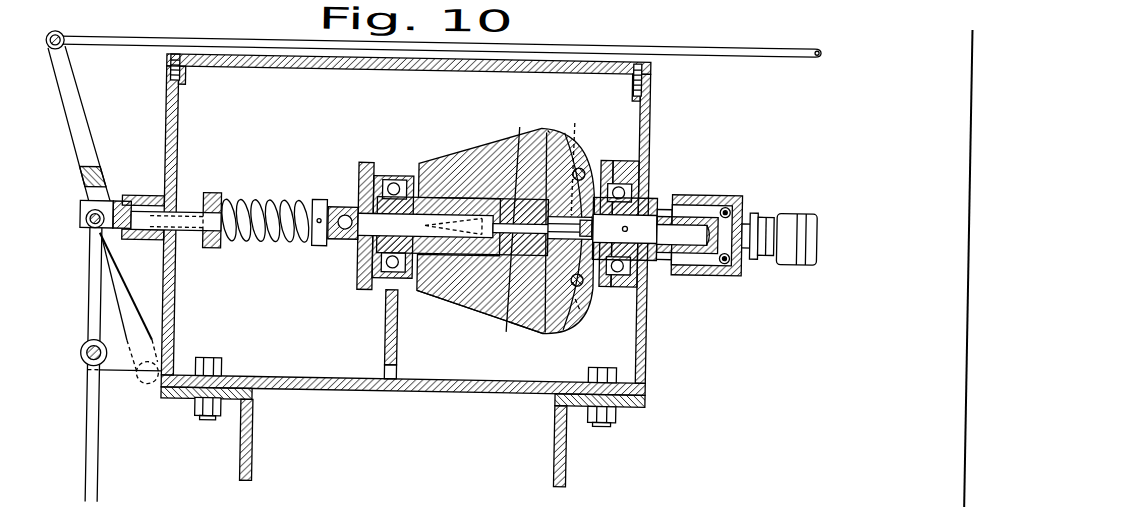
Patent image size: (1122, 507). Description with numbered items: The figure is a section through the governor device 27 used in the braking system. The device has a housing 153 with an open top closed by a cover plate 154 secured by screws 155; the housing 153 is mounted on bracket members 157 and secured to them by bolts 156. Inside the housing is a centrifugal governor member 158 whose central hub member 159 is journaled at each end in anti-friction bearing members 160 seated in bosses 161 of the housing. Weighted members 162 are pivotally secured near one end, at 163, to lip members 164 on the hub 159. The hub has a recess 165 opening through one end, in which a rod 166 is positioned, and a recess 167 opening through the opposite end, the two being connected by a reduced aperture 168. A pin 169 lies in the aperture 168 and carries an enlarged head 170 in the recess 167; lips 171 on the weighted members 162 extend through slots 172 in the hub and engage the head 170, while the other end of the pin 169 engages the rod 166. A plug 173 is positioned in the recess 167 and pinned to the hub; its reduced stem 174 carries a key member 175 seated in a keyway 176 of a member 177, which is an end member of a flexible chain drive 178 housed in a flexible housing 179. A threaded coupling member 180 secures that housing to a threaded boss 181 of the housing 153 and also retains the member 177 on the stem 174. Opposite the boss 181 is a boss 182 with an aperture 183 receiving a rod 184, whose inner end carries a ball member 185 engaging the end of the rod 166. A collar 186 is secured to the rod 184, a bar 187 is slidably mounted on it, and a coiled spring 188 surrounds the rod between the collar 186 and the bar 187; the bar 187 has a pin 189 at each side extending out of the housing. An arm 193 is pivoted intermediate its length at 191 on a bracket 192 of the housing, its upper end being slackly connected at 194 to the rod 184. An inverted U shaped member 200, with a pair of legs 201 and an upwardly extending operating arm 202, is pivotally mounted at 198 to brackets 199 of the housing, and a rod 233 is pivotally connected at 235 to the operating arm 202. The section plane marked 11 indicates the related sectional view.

The section line 11 is at (247, 141).
The governor device 27 is at (441, 401).
The housing 153 is at (304, 391).
The cover plate 154 is at (360, 70).
The screws 155 is at (640, 78).
The bolts 156 is at (212, 362).
The bracket members 157 is at (243, 446).
The centrifugal governor member 158 is at (487, 318).
The central hub member 159 is at (505, 212).
The anti-friction bearing members 160 is at (393, 176).
The bosses 161 is at (380, 289).
The weighted members 162 is at (464, 152).
The pivot 163 is at (581, 166).
The lip members 164 is at (595, 310).
The recess 165 is at (366, 251).
The rod 166 is at (362, 216).
The recess 167 is at (547, 333).
The reduced aperture 168 is at (511, 326).
The pin 169 is at (522, 225).
The enlarged head 170 is at (579, 310).
The lips 171 is at (592, 224).
The slots 172 is at (546, 128).
The plug 173 is at (645, 206).
The reduced stem 174 is at (680, 263).
The key member 175 is at (681, 212).
The keyway 176 is at (722, 228).
The end member 177 is at (736, 256).
The flexible chain drive 178 is at (766, 216).
The flexible housing 179 is at (781, 256).
The threaded coupling member 180 is at (720, 268).
The threaded boss 181 is at (665, 260).
The boss 182 is at (147, 201).
The aperture 183 is at (153, 245).
The rod 184 is at (185, 236).
The ball member 185 is at (344, 231).
The collar 186 is at (316, 202).
The bar 187 is at (213, 197).
The coiled spring 188 is at (264, 201).
The pin 189 is at (189, 218).
The pivot 191 is at (83, 358).
The bracket 192 is at (119, 373).
The arm 193 is at (89, 467).
The slack connection 194 is at (85, 224).
The pivot 198 is at (150, 388).
The brackets 199 is at (160, 390).
The inverted U shaped member 200 is at (111, 304).
The legs 201 is at (127, 324).
The operating arm 202 is at (81, 112).
The rod 233 is at (757, 42).
The pivot 235 is at (61, 40).